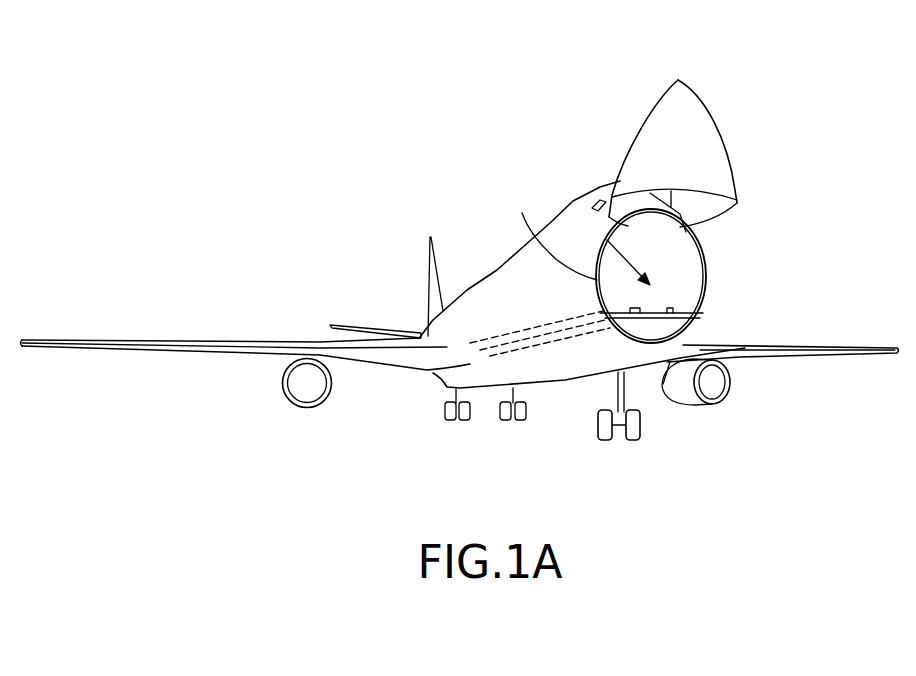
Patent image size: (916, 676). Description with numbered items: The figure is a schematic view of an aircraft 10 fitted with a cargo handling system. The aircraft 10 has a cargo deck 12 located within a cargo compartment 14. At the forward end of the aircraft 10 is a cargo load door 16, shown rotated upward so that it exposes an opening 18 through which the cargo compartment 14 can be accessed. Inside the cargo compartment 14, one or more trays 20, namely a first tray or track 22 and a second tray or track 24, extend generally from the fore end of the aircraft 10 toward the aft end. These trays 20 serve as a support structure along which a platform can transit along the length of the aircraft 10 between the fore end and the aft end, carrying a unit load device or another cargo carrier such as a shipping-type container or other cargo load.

The aircraft 10 is at (440, 114).
The cargo deck 12 is at (700, 320).
The cargo compartment 14 is at (675, 250).
The cargo load door 16 is at (713, 105).
The opening 18 is at (722, 250).
The trays 20 is at (603, 240).
The first tray or track 22 is at (680, 302).
The second tray or track 24 is at (554, 233).